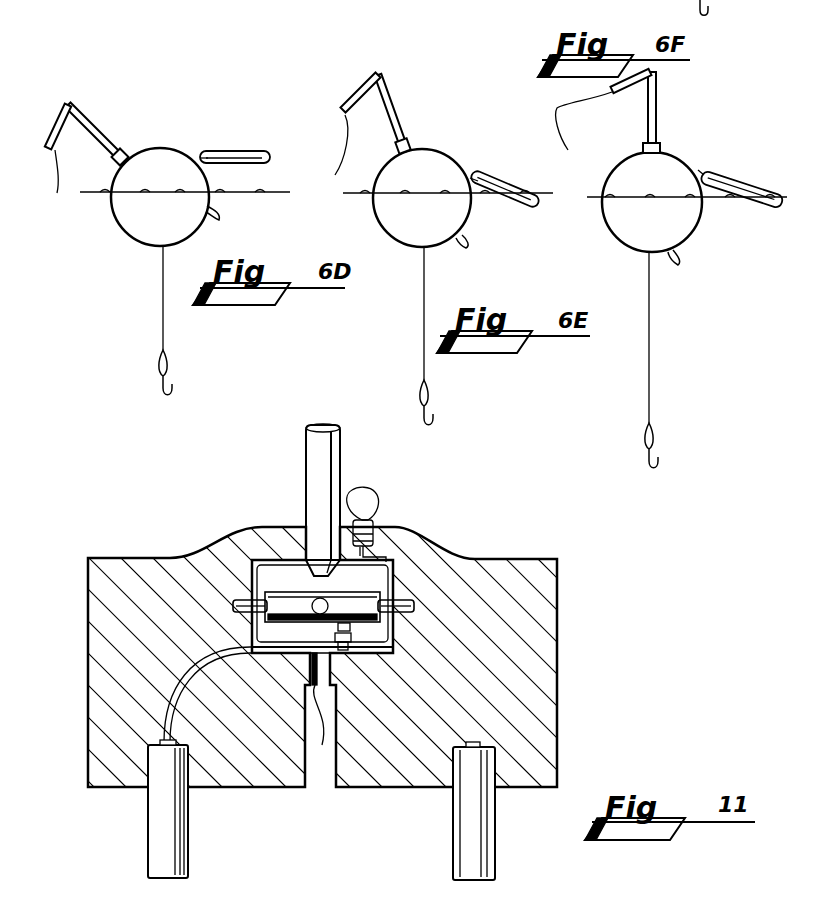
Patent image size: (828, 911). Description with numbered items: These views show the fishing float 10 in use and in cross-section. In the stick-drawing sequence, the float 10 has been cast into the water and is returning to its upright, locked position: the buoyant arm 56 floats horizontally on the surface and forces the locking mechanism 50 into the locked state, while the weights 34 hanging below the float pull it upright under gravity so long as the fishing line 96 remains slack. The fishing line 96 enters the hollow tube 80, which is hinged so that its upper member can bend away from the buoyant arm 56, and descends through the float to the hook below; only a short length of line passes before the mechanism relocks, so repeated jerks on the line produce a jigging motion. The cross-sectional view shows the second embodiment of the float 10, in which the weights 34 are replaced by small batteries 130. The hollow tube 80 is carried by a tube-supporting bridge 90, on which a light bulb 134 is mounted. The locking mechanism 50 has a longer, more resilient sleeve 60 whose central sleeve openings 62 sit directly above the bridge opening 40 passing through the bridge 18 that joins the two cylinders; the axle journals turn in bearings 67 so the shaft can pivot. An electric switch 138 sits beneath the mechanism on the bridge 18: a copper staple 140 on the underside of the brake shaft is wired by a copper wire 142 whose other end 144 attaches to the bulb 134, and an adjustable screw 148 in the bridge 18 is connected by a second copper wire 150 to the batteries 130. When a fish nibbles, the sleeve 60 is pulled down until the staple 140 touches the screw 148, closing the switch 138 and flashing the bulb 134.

In FIG. 6D, the hollow tube 80 is at (95, 130).
In FIG. 6E, the hollow tube 80 is at (396, 110).
In FIG. 6F, the hollow tube 80 is at (656, 122).
In FIG. 11, the hollow tube 80 is at (306, 442).
In FIG. 6D, the buoyant arm 56 is at (228, 152).
In FIG. 6E, the buoyant arm 56 is at (490, 172).
In FIG. 6F, the buoyant arm 56 is at (740, 178).
In FIG. 6D, the fishing line 96 is at (57, 192).
In FIG. 6E, the fishing line 96 is at (336, 172).
In FIG. 6F, the fishing line 96 is at (584, 134).
In FIG. 6D, the weights 34 is at (212, 212).
In FIG. 6E, the weights 34 is at (470, 236).
In FIG. 6F, the weights 34 is at (682, 252).
In FIG. 11, the fishing float 10 is at (160, 481).
In FIG. 11, the sleeve 60 is at (258, 632).
In FIG. 11, the locking mechanism 50 is at (268, 600).
In FIG. 11, the sleeve openings 62 is at (327, 600).
In FIG. 11, the light bulb 134 is at (362, 488).
In FIG. 11, the tube-supporting bridge 90 is at (385, 533).
In FIG. 11, the copper staple 140 is at (233, 604).
In FIG. 11, the other end of wire 144 is at (385, 648).
In FIG. 11, the copper wire 142 is at (393, 580).
In FIG. 11, the bearing 67 is at (250, 562).
In FIG. 11, the adjustable screw 148 is at (338, 650).
In FIG. 11, the electric switch 138 is at (352, 662).
In FIG. 11, the second copper wire 150 is at (140, 722).
In FIG. 11, the bridge 18 is at (310, 721).
In FIG. 11, the bridge opening 40 is at (321, 736).
In FIG. 11, the batteries 130 is at (160, 824).